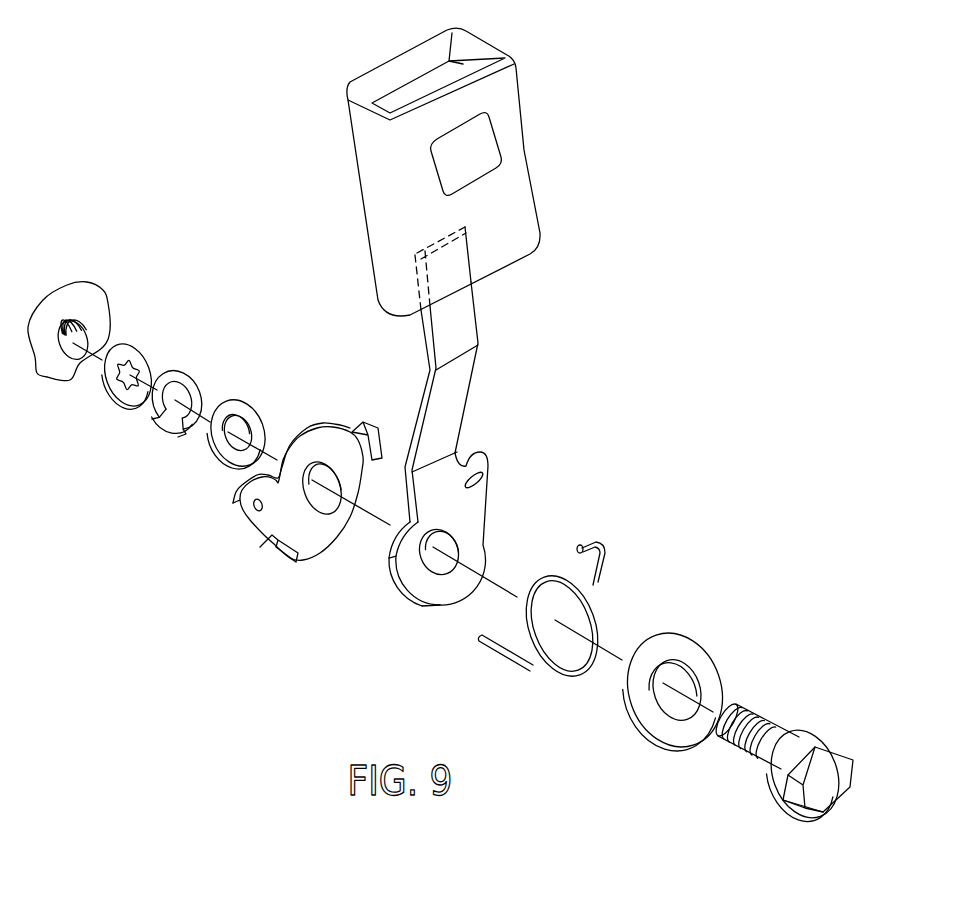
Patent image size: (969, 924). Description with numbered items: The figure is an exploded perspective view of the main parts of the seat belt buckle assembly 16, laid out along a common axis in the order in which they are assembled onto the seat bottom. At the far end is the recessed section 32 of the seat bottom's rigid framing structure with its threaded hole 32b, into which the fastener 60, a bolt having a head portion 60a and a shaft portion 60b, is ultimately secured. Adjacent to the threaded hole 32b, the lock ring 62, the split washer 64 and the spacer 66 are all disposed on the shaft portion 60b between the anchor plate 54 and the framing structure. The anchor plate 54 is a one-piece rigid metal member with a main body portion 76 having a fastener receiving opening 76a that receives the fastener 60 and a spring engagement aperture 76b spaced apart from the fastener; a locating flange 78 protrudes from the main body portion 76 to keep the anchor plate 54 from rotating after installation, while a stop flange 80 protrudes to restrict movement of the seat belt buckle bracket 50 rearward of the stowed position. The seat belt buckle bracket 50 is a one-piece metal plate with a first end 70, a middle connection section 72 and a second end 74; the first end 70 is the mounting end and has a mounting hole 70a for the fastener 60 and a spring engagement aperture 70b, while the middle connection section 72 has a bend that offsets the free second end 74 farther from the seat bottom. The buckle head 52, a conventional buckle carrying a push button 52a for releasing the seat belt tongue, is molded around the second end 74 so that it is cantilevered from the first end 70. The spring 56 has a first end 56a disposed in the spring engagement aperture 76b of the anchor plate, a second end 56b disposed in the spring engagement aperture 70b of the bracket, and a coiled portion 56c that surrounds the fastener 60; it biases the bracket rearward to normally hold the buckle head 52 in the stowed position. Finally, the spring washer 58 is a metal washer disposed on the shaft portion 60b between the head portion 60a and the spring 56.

The seat belt buckle assembly 16 is at (605, 244).
The recessed section 32 is at (77, 336).
The threaded hole 32b is at (75, 362).
The seat belt buckle bracket 50 is at (475, 402).
The buckle head 52 is at (481, 35).
The push button 52a is at (477, 150).
The anchor plate 54 is at (293, 491).
The spring 56 is at (576, 617).
The first end 56a is at (495, 655).
The second end 56b is at (600, 545).
The coiled portion 56c is at (546, 597).
The spring washer 58 is at (670, 745).
The fastener 60 is at (788, 765).
The head portion 60a is at (827, 810).
The shaft portion 60b is at (762, 727).
The lock ring 62 is at (152, 350).
The split washer 64 is at (172, 437).
The spacer 66 is at (250, 410).
The first end 70 is at (473, 556).
The mounting hole 70a is at (453, 540).
The spring engagement aperture 70b is at (482, 480).
The middle connection section 72 is at (447, 412).
The second end 74 is at (467, 258).
The main body portion 76 is at (332, 447).
The fastener receiving opening 76a is at (337, 510).
The spring engagement aperture 76b is at (252, 508).
The locating flange 78 is at (268, 560).
The stop flange 80 is at (377, 432).